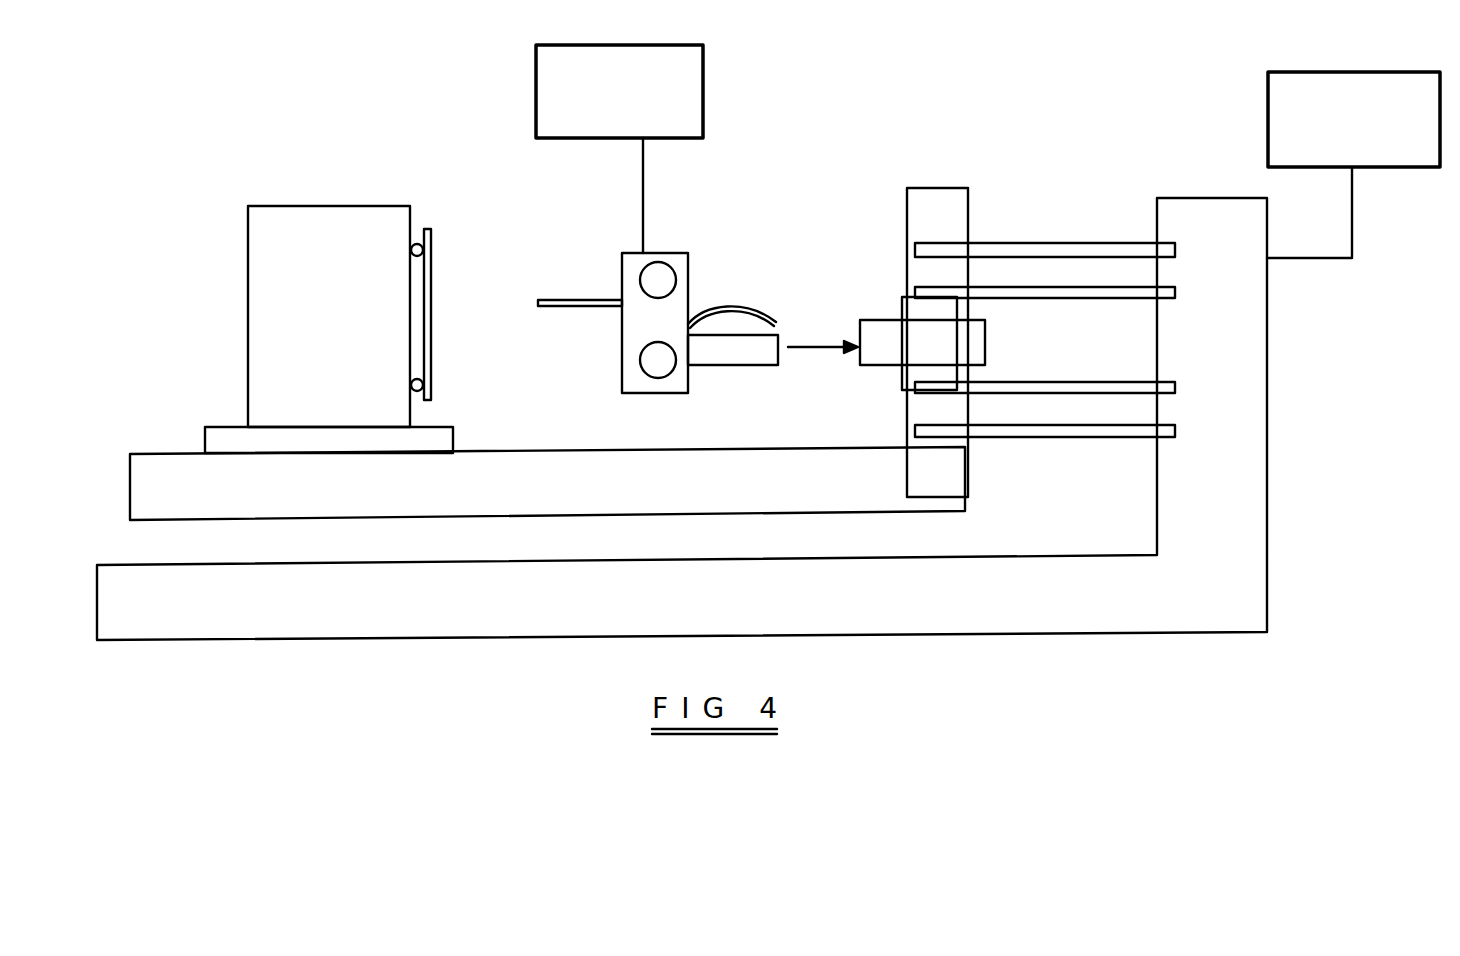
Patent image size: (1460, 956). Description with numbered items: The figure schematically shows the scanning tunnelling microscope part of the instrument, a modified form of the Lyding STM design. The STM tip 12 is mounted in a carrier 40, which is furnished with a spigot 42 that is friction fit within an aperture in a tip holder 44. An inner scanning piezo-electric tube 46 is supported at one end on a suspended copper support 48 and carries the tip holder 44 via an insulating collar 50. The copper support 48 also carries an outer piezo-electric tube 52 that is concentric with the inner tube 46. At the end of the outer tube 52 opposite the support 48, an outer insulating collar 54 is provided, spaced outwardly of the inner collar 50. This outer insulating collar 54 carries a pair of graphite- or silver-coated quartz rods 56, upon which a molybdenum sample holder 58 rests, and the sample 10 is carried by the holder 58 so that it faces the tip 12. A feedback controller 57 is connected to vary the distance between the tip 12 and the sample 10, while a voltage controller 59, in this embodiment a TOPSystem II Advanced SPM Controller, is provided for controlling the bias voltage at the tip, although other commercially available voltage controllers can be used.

The sample 10 is at (432, 239).
The STM tip 12 is at (557, 307).
The carrier 40 is at (688, 259).
The spigot 42 is at (777, 337).
The tip holder 44 is at (882, 321).
The inner scanning piezo-electric tube 46 is at (1024, 408).
The suspended copper support 48 is at (1256, 357).
The insulating collar 50 is at (937, 310).
The outer piezo-electric tube 52 is at (1090, 246).
The outer insulating collar 54 is at (938, 198).
The quartz rods 56 is at (803, 462).
The feedback controller 57 is at (1268, 100).
The molybdenum sample holder 58 is at (336, 207).
The voltage controller 59 is at (536, 88).